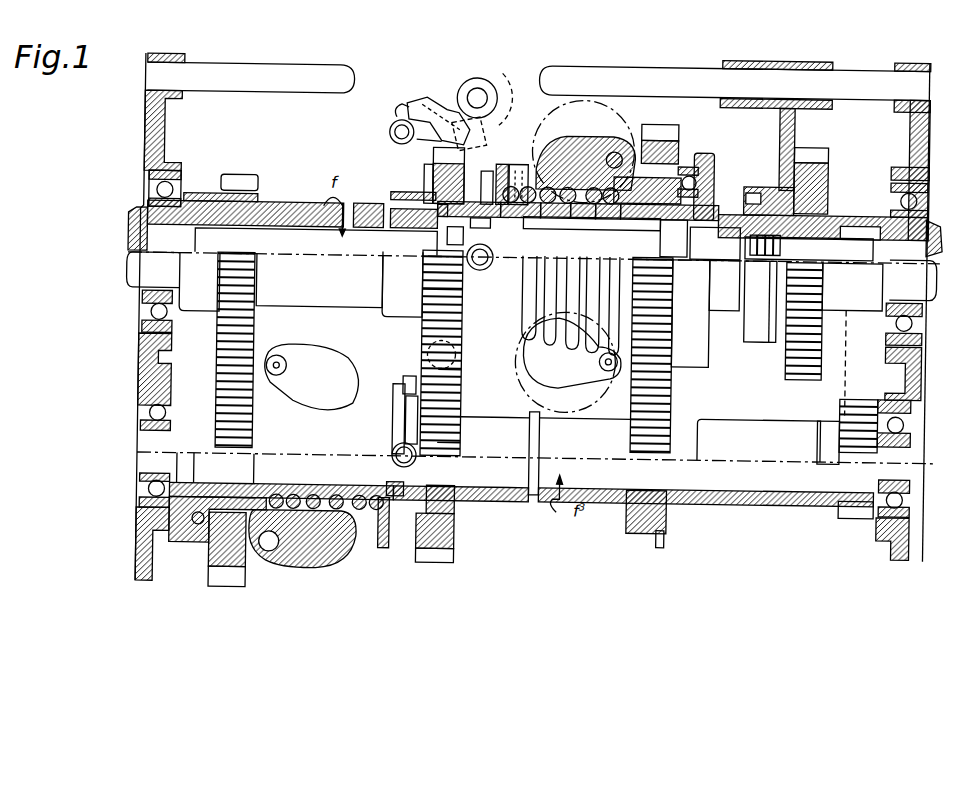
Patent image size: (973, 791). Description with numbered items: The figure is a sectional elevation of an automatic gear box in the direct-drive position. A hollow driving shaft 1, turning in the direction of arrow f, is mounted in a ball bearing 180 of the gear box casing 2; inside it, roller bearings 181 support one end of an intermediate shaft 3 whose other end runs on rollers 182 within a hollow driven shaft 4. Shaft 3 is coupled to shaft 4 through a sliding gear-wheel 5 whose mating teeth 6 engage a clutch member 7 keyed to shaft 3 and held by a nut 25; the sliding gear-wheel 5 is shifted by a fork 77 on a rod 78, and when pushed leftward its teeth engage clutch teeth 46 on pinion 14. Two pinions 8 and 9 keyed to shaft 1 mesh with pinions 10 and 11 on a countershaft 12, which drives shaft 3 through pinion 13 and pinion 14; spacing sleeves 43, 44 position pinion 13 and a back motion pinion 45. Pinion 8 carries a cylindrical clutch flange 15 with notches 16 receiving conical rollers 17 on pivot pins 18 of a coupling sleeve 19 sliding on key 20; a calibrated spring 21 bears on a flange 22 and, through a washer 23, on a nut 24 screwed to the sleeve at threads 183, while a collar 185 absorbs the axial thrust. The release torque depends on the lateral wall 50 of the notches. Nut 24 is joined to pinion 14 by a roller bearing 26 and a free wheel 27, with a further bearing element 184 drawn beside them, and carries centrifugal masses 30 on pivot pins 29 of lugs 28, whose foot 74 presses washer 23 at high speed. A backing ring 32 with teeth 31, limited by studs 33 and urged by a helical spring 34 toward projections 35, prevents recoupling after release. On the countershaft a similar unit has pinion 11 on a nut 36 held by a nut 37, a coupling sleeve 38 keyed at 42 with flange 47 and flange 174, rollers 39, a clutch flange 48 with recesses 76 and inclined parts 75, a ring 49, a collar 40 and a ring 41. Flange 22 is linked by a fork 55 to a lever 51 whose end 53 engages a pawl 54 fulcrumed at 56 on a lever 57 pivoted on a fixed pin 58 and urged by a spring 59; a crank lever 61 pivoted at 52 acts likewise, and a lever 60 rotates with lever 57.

The hollow driving shaft 1 is at (281, 204).
The gear box casing 2 is at (172, 166).
The intermediate shaft 3 is at (293, 227).
The hollow driven shaft 4 is at (866, 208).
The sliding gear-wheel 5 is at (816, 188).
The mating teeth 6 is at (765, 178).
The clutch member 7 is at (728, 210).
The pinion 8 is at (432, 166).
The pinion 9 is at (225, 177).
The pinion 10 is at (458, 531).
The pinion 11 is at (250, 571).
The countershaft 12 is at (521, 489).
The pinion 13 is at (669, 509).
The pinion 14 is at (655, 134).
The cylindrical clutch flange 15 is at (463, 365).
The notches 16 is at (460, 287).
The conical rollers 17 is at (478, 240).
The pivot pins 18 is at (460, 270).
The coupling sleeve 19 is at (557, 214).
The key 20 is at (537, 211).
The calibrated spring 21 is at (518, 160).
The flange 22 is at (503, 158).
The washer 23 is at (582, 214).
The nut 24 is at (672, 238).
The nut 25 is at (809, 249).
The roller bearing 26 is at (705, 150).
The free wheel 27 is at (678, 160).
The lugs 28 is at (604, 214).
The pivot pins 29 is at (622, 130).
The centrifugal masses 30 is at (585, 132).
The teeth 31 is at (492, 281).
The backing ring 32 is at (430, 187).
The studs 33 is at (440, 213).
The helical spring 34 is at (485, 166).
The projections 35 is at (450, 233).
The nut 36 is at (227, 523).
The nut 37 is at (141, 482).
The coupling sleeve 38 is at (372, 512).
The rollers 39 is at (390, 480).
The collar 40 is at (537, 492).
The ring 41 is at (458, 500).
The key 42 is at (332, 481).
The spacing sleeve 43 is at (640, 499).
The spacing sleeve 44 is at (738, 497).
The back motion pinion 45 is at (830, 412).
The clutch teeth 46 is at (715, 243).
The flange 47 is at (387, 546).
The clutch flange 48 is at (440, 409).
The ring 49 is at (408, 400).
The lateral wall 50 is at (467, 255).
The lever 51 is at (530, 366).
The pivot 52 is at (430, 346).
The end of lever 53 is at (427, 137).
The pawl 54 is at (487, 134).
The fork 55 is at (500, 207).
The fulcrum 56 is at (390, 125).
The lever 57 is at (450, 106).
The fixed pin 58 is at (478, 88).
The spring 59 is at (410, 117).
The lever 60 is at (496, 116).
The crank lever 61 is at (400, 379).
The foot 74 is at (650, 134).
The inclined parts 75 is at (420, 456).
The recesses 76 is at (463, 438).
The fork 77 is at (793, 118).
The rod 78 is at (850, 64).
The flange 174 is at (405, 380).
The ball bearing 180 is at (170, 189).
The roller bearings 181 is at (132, 251).
The rollers 182 is at (843, 212).
The threads 183 is at (648, 214).
The bearing 184 is at (700, 181).
The collar 185 is at (392, 191).